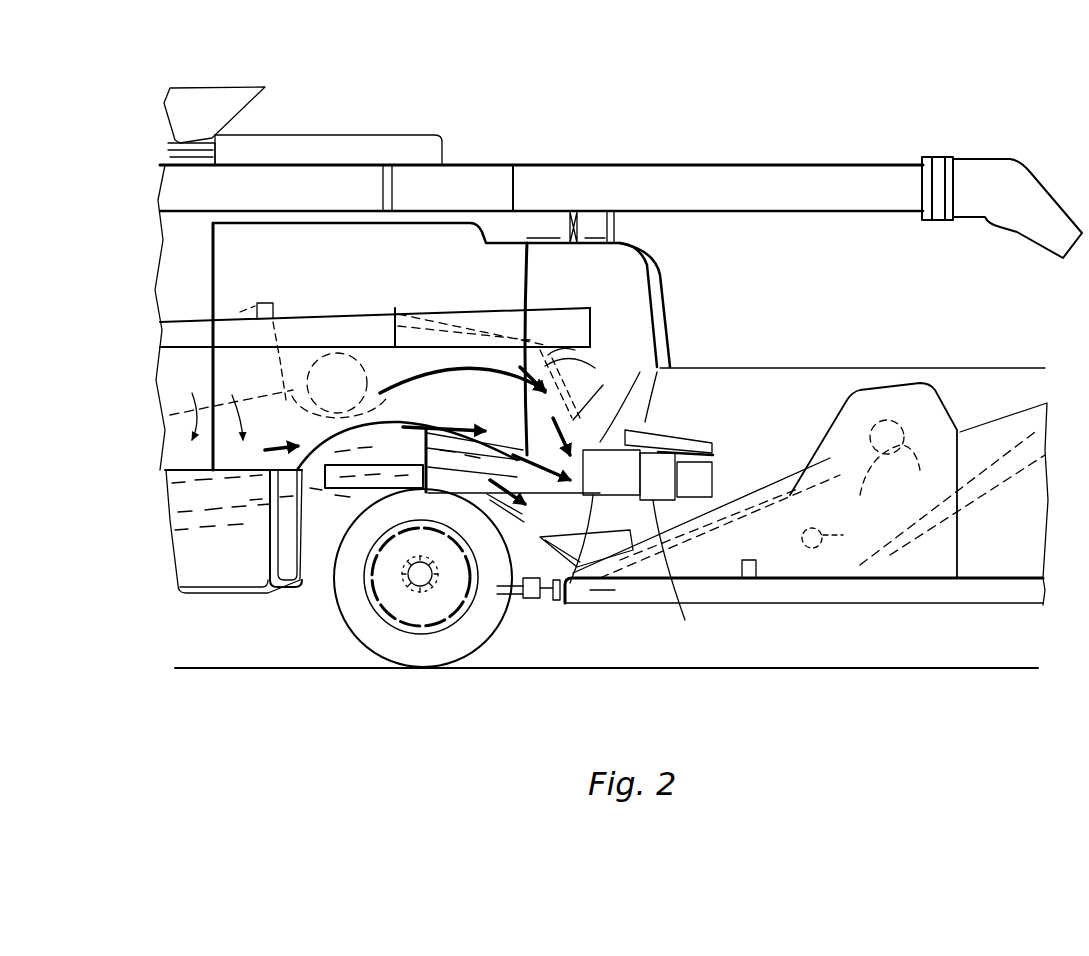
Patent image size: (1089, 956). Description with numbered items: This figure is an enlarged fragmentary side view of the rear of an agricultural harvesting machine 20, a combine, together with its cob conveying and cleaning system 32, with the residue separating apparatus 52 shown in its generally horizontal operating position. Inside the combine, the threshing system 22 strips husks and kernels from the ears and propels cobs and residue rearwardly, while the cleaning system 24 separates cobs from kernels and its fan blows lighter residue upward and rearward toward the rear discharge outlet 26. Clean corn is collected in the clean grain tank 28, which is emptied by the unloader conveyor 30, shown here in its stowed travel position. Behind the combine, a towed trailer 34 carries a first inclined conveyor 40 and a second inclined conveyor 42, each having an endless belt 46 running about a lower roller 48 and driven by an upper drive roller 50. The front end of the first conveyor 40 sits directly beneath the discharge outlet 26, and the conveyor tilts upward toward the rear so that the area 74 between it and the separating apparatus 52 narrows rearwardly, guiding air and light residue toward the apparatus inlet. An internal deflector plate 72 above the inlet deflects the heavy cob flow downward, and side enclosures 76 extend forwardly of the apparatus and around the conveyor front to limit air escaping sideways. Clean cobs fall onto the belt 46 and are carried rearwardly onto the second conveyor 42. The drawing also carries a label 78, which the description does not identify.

The agricultural harvesting machine 20 is at (548, 98).
The threshing system 22 is at (258, 298).
The cleaning system 24 is at (207, 523).
The rear discharge outlet 26 is at (548, 510).
The clean grain tank 28 is at (212, 86).
The unloader conveyor 30 is at (851, 162).
The cob conveying and cleaning system 32 is at (1005, 364).
The trailer 34 is at (1030, 604).
The first inclined conveyor 40 is at (797, 480).
The second inclined conveyor 42 is at (990, 466).
The endless belt 46 is at (742, 585).
The roller 48 is at (845, 535).
The drive roller 50 is at (813, 548).
The residue separating apparatus 52 is at (672, 565).
The internal deflector plate 72 is at (548, 355).
The area 74 is at (747, 538).
The side enclosures 76 is at (566, 535).
The discharge chute 78 is at (700, 515).